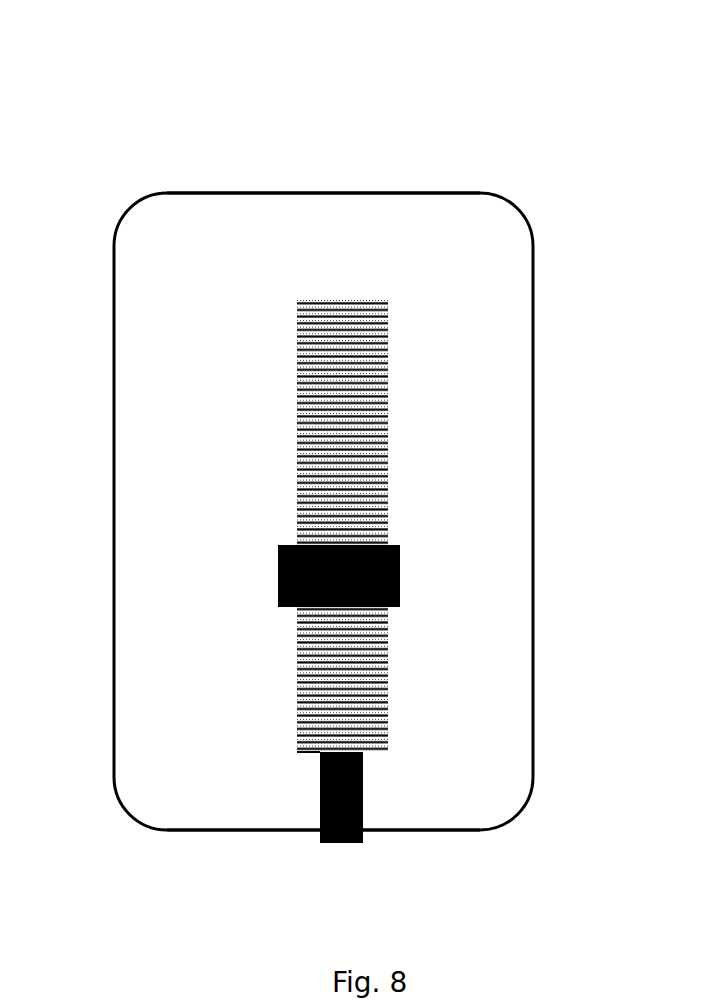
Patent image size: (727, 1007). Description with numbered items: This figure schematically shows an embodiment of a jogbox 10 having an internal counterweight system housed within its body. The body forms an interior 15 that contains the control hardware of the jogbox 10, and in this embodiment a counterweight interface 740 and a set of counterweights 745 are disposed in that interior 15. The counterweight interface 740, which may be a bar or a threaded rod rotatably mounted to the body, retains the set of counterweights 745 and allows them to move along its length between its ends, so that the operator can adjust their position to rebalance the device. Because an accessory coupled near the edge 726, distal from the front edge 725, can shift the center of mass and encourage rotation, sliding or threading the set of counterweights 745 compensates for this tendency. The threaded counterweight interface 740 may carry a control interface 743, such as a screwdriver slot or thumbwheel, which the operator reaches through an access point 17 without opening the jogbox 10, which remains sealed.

The jogbox 10 is at (314, 548).
The interior 15 is at (175, 370).
The access point 17 is at (337, 843).
The front edge 725 is at (193, 854).
The edge 726 is at (395, 160).
The counterweight interface 740 is at (388, 732).
The control interface 743 is at (308, 753).
The set of counterweights 745 is at (400, 568).